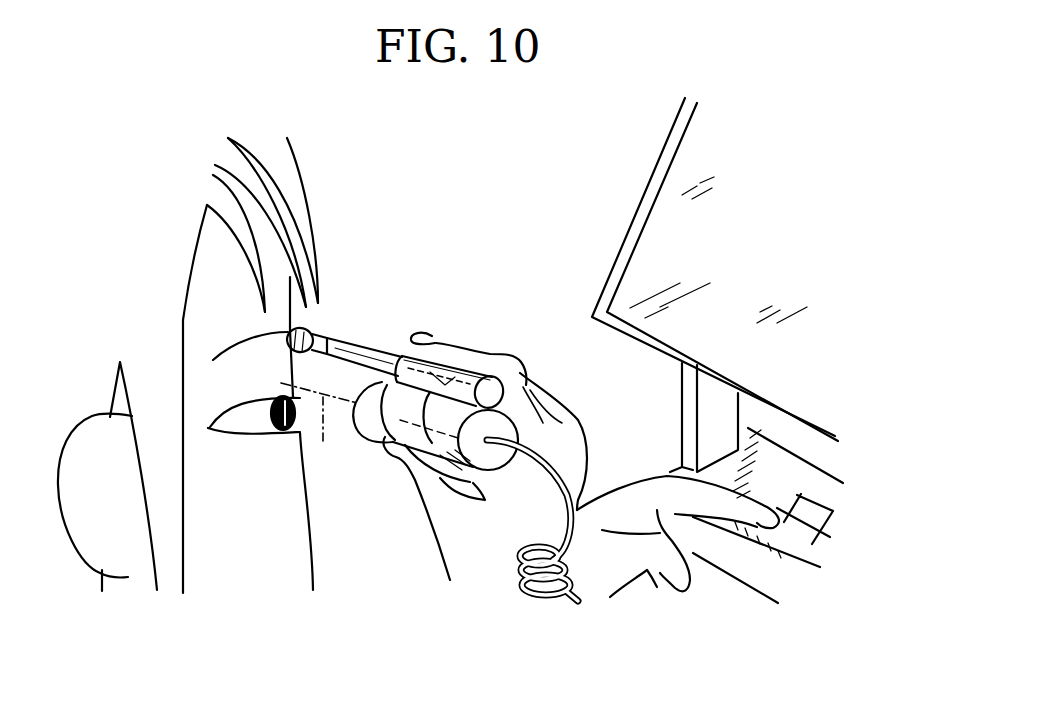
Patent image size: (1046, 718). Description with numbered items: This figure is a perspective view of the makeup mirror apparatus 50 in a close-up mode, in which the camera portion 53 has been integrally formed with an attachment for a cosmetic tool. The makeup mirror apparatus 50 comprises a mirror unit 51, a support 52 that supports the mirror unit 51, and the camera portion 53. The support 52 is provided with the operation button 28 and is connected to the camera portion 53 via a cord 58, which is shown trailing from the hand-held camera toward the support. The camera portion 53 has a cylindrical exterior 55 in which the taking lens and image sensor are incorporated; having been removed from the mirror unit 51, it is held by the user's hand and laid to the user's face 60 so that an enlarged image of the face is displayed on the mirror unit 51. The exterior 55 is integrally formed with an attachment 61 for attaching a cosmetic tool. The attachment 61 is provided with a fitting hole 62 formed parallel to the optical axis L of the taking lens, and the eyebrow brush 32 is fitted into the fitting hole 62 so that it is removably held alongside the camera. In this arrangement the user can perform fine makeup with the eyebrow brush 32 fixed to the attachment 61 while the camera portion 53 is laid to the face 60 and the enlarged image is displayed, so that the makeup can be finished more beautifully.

The makeup mirror apparatus 50 is at (664, 350).
The mirror unit 51 is at (618, 212).
The support 52 is at (653, 397).
The operation button 28 is at (793, 507).
The camera portion 53 is at (519, 385).
The attachment 61 is at (480, 342).
The fitting hole 62 is at (438, 333).
The eyebrow brush 32 is at (357, 350).
The exterior 55 is at (405, 424).
The cord 58 is at (528, 540).
The user's face 60 is at (320, 565).
The optical axis L is at (319, 429).